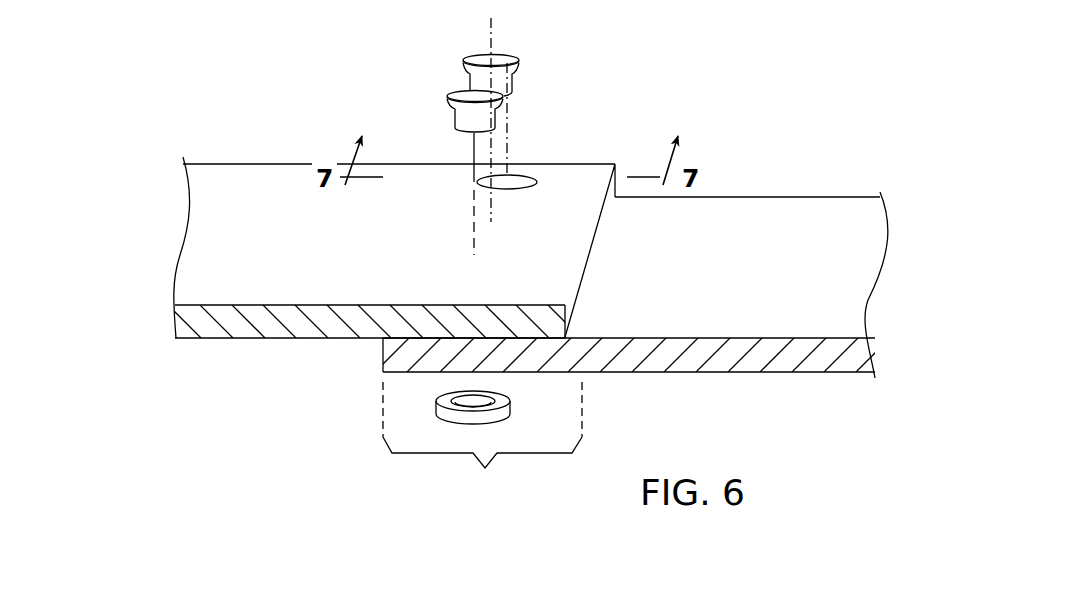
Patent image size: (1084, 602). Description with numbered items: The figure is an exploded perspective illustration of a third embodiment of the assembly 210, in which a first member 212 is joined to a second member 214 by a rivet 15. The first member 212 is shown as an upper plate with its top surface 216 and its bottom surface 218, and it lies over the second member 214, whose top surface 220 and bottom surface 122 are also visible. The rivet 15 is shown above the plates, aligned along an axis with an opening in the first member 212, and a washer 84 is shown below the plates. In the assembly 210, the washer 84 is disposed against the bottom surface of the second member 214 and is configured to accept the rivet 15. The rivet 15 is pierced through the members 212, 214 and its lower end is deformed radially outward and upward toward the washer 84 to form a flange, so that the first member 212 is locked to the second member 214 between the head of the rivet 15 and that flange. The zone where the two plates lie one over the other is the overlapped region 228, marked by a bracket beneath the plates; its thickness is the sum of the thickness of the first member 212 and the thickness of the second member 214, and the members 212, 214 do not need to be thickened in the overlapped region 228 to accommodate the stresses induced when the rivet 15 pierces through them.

The rivet 15 is at (539, 40).
The washer 84 is at (508, 408).
The bottom surface of second plate 122 is at (778, 367).
The assembly 210 is at (798, 115).
The first member 212 is at (140, 128).
The second member 214 is at (822, 390).
The top surface of first plate 216 is at (242, 173).
The bottom surface of first plate 218 is at (242, 338).
The top surface of second plate 220 is at (840, 208).
The overlapped region 228 is at (482, 442).